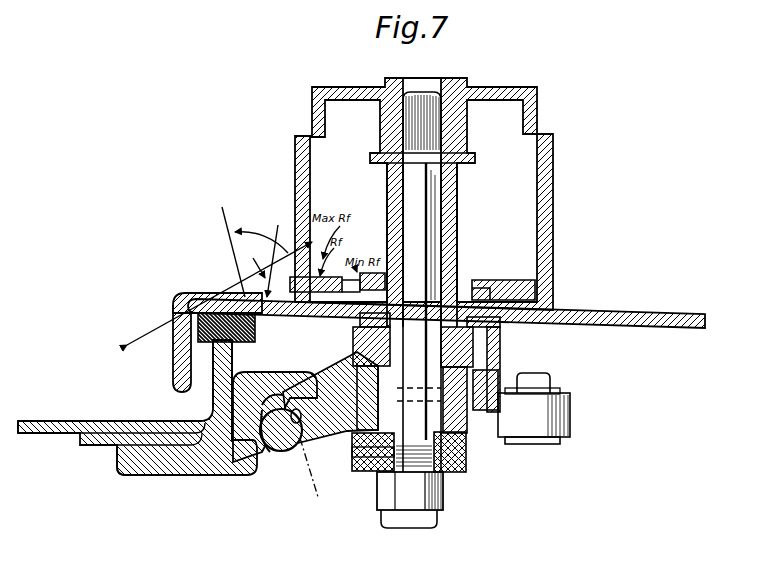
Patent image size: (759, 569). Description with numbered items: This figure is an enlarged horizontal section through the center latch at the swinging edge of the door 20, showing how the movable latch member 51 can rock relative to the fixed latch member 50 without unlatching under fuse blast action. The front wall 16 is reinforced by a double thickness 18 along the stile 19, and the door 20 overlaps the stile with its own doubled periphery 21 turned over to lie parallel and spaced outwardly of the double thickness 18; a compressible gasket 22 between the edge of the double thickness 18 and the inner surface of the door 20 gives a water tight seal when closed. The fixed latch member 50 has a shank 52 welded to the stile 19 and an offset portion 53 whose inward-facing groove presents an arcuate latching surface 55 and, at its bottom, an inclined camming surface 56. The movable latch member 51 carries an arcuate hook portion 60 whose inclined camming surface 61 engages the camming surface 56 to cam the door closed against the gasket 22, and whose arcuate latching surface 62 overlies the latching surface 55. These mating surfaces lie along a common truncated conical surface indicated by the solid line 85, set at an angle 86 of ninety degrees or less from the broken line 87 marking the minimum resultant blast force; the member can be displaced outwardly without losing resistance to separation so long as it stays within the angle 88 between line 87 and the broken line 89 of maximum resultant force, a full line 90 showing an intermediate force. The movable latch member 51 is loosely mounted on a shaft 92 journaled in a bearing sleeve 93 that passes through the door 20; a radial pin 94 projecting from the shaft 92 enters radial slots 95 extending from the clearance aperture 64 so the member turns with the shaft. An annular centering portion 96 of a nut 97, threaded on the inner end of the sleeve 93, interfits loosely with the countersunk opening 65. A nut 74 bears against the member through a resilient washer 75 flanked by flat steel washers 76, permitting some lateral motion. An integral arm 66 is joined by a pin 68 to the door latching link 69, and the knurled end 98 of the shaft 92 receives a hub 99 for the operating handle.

The front wall 16 is at (22, 433).
The double thickness 18 is at (228, 348).
The stile 19 is at (52, 425).
The door 20 is at (655, 313).
The double thickness periphery of the door 21 is at (172, 380).
The compressible gasket 22 is at (209, 343).
The fixed latch member 50 is at (177, 485).
The movable latch member 51 is at (342, 463).
The shank 52 is at (128, 468).
The offset portion 53 is at (300, 388).
The arcuate latching surface 55 is at (308, 397).
The inclined camming surface 56 is at (280, 396).
The arcuate hook portion 60 is at (287, 453).
The inclined camming surface 61 is at (268, 443).
The arcuate latching surface 62 is at (305, 450).
The clearance aperture 64 is at (447, 480).
The countersunk opening 65 is at (480, 350).
The arm 66 is at (572, 429).
The pin 68 is at (551, 444).
The door latching link 69 is at (570, 403).
The nut 74 is at (427, 523).
The resilient washer 75 is at (466, 454).
The flat steel washers 76 is at (477, 448).
The solid line 85 is at (223, 220).
The angle 86 is at (256, 228).
The broken line 87 is at (352, 262).
The angle 88 is at (252, 258).
The broken line 89 is at (250, 258).
The full line 90 is at (278, 253).
The shaft 92 is at (427, 222).
The bearing sleeve 93 is at (458, 190).
The radially extending pin 94 is at (462, 383).
The radial slots 95 is at (368, 470).
The annular centering portion 96 is at (357, 343).
The nut 97 is at (477, 305).
The knurled end 98 is at (423, 127).
The hub 99 is at (555, 158).